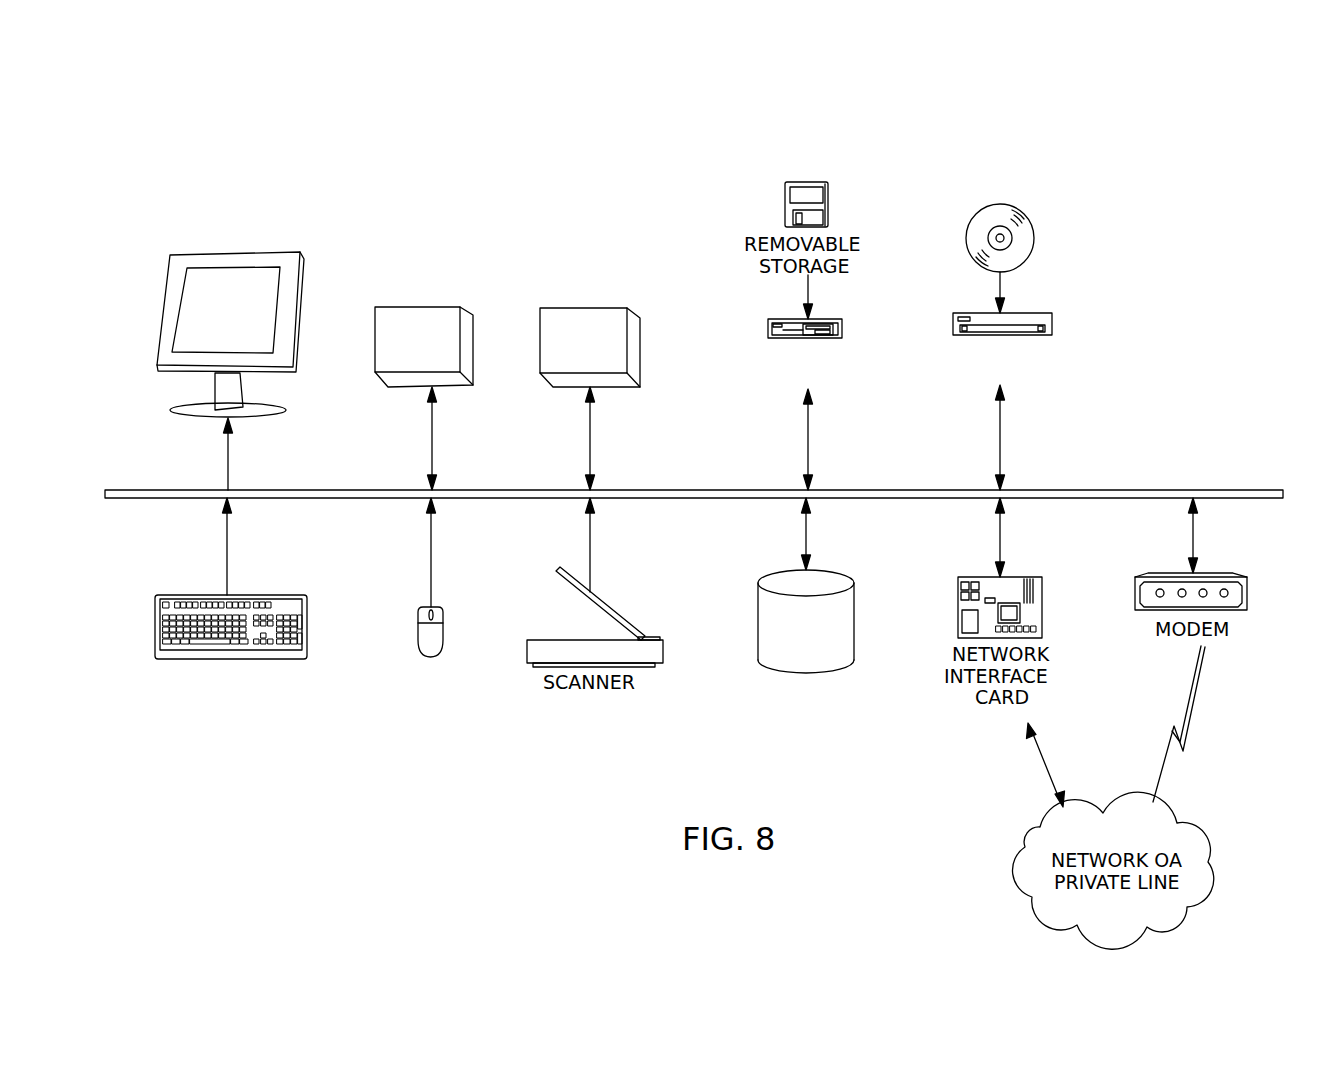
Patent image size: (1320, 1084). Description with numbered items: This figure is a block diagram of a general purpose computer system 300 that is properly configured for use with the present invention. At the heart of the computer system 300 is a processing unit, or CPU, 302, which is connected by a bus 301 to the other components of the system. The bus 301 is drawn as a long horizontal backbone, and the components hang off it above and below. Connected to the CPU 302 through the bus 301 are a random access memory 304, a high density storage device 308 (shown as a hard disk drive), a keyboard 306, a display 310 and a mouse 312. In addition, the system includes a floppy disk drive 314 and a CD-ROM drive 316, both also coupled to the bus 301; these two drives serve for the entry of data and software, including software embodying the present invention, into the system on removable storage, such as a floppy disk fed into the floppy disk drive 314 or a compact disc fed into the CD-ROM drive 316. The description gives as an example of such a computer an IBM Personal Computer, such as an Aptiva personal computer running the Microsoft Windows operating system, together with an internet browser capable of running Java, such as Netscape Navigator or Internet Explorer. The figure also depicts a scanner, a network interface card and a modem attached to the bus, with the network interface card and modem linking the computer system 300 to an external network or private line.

The computer system 300 is at (589, 154).
The bus 301 is at (1147, 488).
The processing unit (CPU) 302 is at (418, 307).
The random access memory 304 is at (583, 308).
The keyboard 306 is at (153, 618).
The high density storage device 308 is at (803, 672).
The display 310 is at (233, 251).
The mouse 312 is at (417, 637).
The floppy disk drive 314 is at (767, 327).
The CD-ROM drive 316 is at (1052, 320).